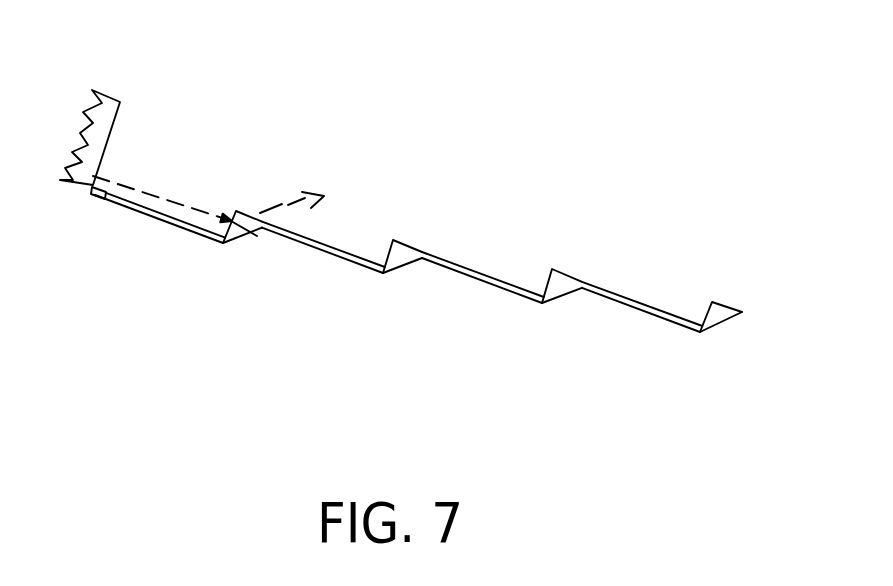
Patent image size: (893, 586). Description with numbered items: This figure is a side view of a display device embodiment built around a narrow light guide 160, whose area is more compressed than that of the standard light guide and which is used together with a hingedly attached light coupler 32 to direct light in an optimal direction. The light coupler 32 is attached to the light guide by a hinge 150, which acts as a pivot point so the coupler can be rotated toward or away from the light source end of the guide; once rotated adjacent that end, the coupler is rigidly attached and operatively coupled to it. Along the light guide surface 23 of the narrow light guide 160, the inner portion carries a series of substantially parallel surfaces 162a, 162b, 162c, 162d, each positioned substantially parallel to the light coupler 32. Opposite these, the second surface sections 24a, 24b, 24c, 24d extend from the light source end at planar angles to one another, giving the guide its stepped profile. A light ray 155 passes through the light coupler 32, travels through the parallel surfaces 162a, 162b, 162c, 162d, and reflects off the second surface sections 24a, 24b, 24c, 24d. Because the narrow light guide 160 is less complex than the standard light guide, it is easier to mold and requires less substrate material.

The light coupler 32 is at (110, 80).
The hinge 150 is at (101, 206).
The light ray 155 is at (158, 177).
The narrow light guide 160 is at (428, 224).
The light guide surface 23 is at (343, 291).
The substantially parallel surface 162a is at (220, 196).
The substantially parallel surface 162b is at (377, 243).
The substantially parallel surface 162c is at (532, 273).
The substantially parallel surface 162d is at (694, 303).
The second surface section 24a is at (251, 252).
The second surface section 24b is at (416, 278).
The second surface section 24c is at (569, 306).
The second surface section 24d is at (729, 338).